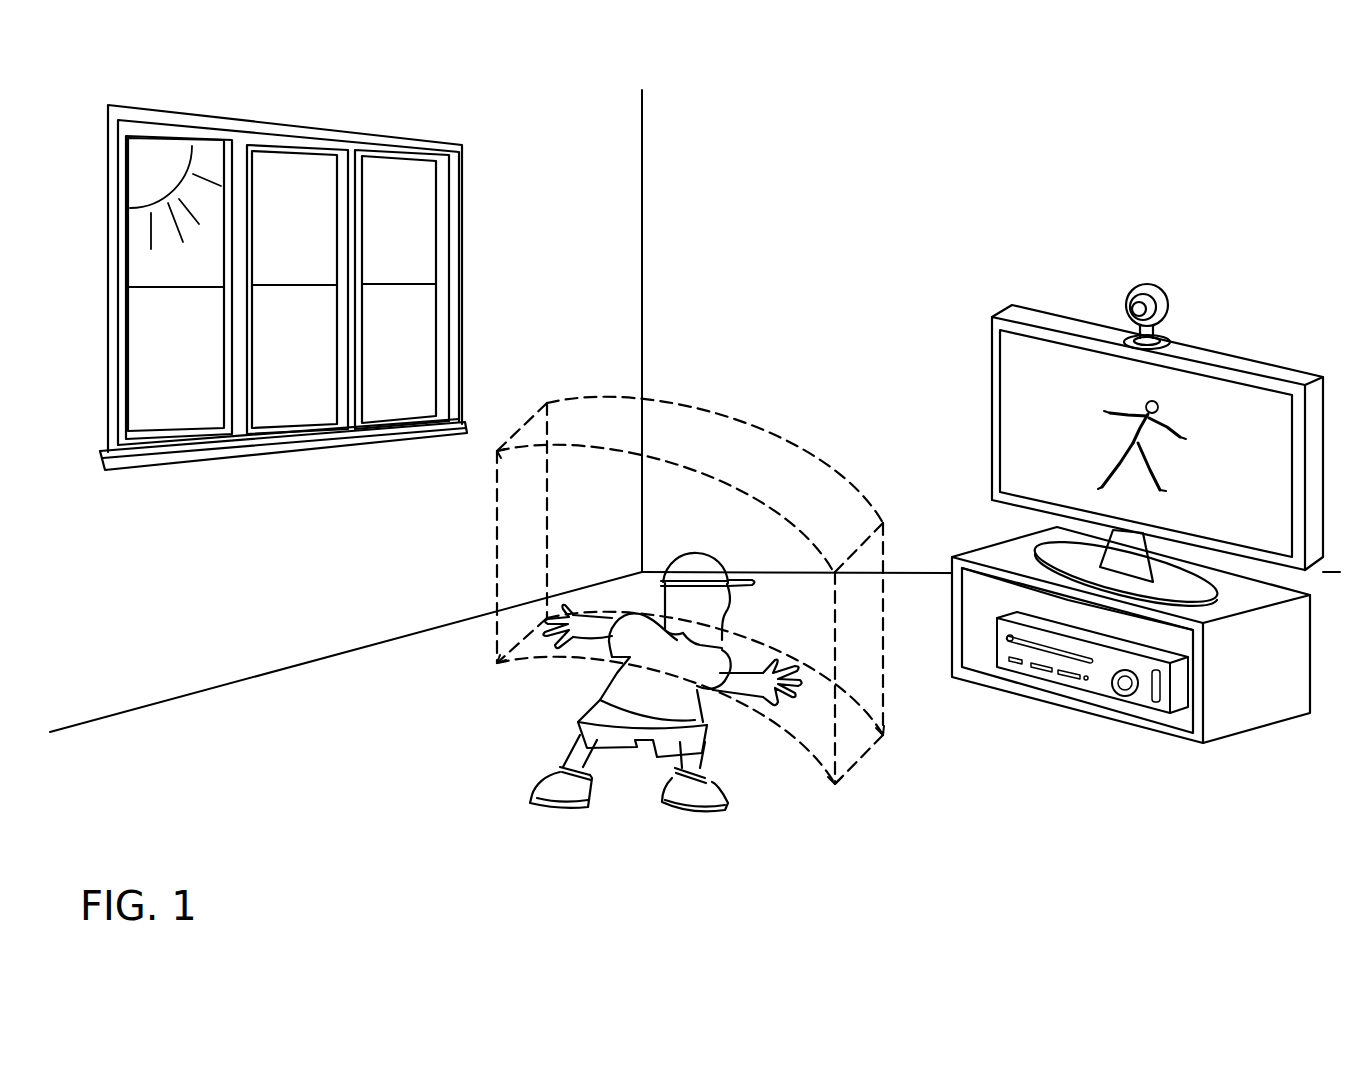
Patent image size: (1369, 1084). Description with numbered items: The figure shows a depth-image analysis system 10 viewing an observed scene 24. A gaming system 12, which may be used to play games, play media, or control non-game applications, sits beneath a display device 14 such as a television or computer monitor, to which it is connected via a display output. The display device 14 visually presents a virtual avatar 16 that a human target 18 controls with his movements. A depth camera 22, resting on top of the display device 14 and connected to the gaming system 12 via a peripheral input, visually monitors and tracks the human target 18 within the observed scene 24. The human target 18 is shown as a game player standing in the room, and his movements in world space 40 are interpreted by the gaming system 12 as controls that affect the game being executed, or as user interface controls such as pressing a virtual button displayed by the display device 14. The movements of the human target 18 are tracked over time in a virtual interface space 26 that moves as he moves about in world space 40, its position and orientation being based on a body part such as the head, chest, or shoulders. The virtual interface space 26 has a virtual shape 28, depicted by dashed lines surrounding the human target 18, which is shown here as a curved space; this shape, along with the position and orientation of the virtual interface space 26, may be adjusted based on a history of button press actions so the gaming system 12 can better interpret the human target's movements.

The depth-image analysis system 10 is at (893, 182).
The gaming system 12 is at (1100, 693).
The display device 14 is at (1290, 422).
The virtual avatar 16 is at (1157, 400).
The human target 18 is at (665, 707).
The depth camera 22 is at (1172, 290).
The observed scene 24 is at (598, 568).
The virtual interface space 26 is at (706, 410).
The virtual shape 28 is at (827, 461).
The world space 40 is at (705, 543).